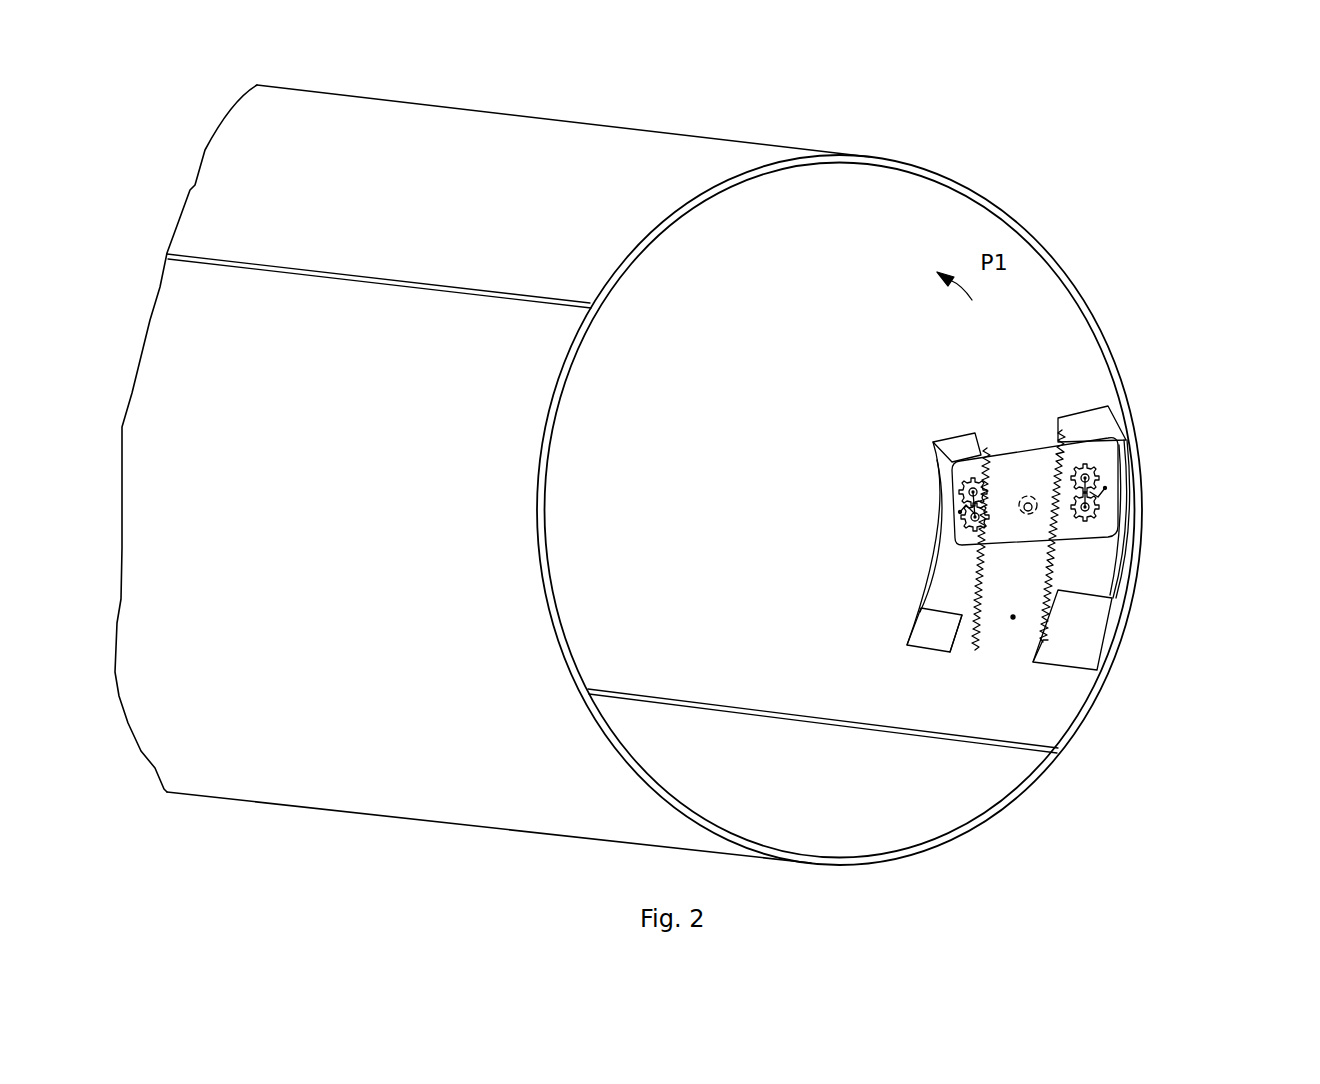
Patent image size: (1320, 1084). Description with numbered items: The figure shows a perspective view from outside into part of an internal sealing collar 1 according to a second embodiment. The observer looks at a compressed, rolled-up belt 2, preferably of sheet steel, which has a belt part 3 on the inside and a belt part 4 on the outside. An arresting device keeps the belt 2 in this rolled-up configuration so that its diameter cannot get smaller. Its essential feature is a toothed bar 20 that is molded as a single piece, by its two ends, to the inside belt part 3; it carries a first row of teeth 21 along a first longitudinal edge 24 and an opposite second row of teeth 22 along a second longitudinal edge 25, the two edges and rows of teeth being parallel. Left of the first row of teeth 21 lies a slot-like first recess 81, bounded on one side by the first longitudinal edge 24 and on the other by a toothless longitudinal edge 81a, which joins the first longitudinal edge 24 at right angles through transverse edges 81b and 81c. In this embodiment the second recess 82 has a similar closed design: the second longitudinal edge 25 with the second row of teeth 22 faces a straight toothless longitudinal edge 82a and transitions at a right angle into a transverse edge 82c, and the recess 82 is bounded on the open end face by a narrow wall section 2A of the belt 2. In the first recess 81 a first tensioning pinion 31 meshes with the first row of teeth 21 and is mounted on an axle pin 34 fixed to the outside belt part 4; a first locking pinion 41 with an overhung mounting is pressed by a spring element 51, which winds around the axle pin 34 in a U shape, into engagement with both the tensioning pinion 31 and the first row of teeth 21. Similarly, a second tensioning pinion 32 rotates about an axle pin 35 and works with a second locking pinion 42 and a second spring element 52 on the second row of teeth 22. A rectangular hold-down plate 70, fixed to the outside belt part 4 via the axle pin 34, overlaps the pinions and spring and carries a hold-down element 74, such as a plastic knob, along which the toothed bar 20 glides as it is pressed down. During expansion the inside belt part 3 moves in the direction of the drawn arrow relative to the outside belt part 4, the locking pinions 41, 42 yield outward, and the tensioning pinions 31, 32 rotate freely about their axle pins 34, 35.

The internal sealing collar 1 is at (1138, 137).
The belt 2 is at (321, 520).
The wall section 2A is at (1123, 640).
The belt part on the inside 3 is at (737, 699).
The belt part on the outside 4 is at (345, 266).
The toothed bar 20 is at (1062, 538).
The first row of teeth 21 is at (979, 650).
The second row of teeth 22 is at (1108, 627).
The first longitudinal edge 24 is at (950, 652).
The second longitudinal edge 25 is at (1030, 660).
The first tensioning pinion 31 is at (962, 521).
The second tensioning pinion 32 is at (1120, 497).
The axle pin 34 is at (945, 530).
The axle pin 35 is at (1125, 530).
The first locking pinion 41 is at (955, 488).
The second locking pinion 42 is at (1097, 478).
The spring element 51 is at (955, 507).
The second spring element 52 is at (1098, 505).
The hold-down plate 70 is at (1015, 453).
The hold-down element 74 is at (1021, 552).
The first recess 81 is at (895, 522).
The longitudinal edge 81a is at (926, 604).
The transverse edge 81b is at (897, 642).
The transverse edge 81c is at (940, 432).
The second recess 82 is at (1168, 524).
The longitudinal edge 82a is at (1140, 612).
The transverse edge 82c is at (1068, 418).